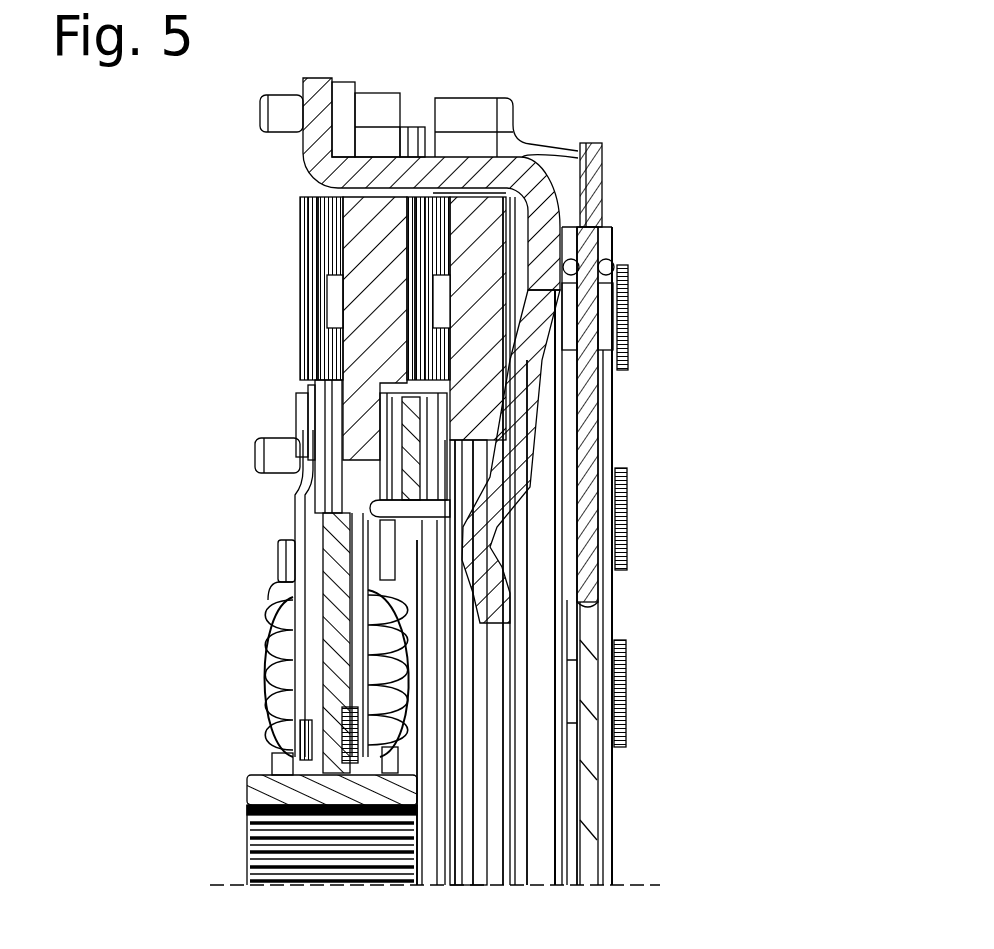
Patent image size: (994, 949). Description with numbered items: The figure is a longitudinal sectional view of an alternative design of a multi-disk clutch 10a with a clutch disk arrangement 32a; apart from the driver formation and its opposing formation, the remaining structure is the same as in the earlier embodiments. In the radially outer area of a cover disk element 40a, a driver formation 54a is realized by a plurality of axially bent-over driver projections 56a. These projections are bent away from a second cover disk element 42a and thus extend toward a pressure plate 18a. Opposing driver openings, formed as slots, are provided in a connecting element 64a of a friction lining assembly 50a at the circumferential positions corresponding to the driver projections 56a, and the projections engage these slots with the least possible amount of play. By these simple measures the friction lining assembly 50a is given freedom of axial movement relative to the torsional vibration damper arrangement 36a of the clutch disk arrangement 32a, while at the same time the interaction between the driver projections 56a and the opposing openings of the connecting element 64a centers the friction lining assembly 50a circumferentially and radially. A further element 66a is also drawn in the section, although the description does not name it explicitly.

The multi-disk clutch 10a is at (652, 94).
The pressure plate 18a is at (473, 265).
The friction lining assembly 50a is at (362, 403).
The driver projections 56a is at (432, 497).
The guide tube 66a is at (433, 540).
The connecting element 64a is at (345, 400).
The driver formation 54a is at (368, 485).
The torsional vibration damper arrangement 36a is at (252, 552).
The clutch disk arrangement 32a is at (222, 622).
The cover disk element 42a is at (300, 673).
The cover disk element 40a is at (377, 710).